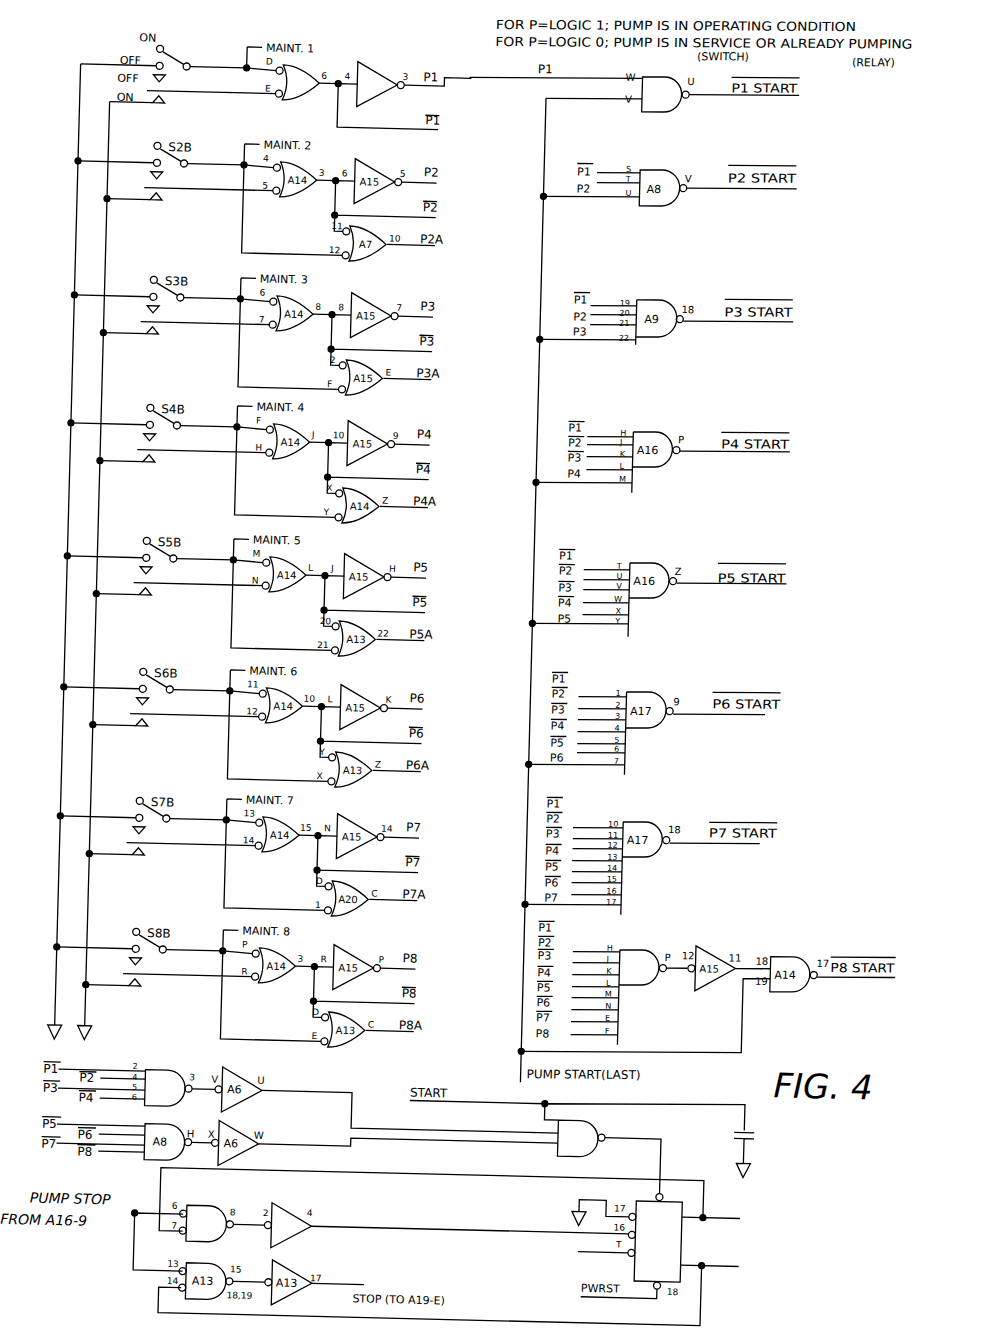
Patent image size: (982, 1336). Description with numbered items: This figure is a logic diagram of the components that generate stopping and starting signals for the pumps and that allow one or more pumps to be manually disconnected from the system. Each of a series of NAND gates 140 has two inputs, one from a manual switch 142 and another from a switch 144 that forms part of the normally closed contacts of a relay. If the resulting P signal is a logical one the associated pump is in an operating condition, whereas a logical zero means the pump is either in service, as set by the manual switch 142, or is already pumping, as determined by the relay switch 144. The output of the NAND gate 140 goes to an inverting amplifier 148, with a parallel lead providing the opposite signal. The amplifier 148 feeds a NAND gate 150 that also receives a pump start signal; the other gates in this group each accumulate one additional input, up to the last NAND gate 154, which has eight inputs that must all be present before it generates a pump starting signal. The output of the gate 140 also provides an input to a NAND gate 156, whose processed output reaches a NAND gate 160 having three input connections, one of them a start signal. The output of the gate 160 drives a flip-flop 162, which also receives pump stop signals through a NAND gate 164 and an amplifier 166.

The NAND gate 140 is at (310, 75).
The manual switch 142 is at (183, 44).
The switch 144 is at (183, 96).
The inverting amplifier 148 is at (381, 70).
The NAND gate 150 is at (664, 65).
The NAND gate 154 is at (659, 947).
The NAND gate 156 is at (191, 1077).
The NAND gate 160 is at (606, 1152).
The flip-flop 162 is at (713, 1237).
The NAND gate 164 is at (224, 1248).
The amplifier 166 is at (325, 1245).